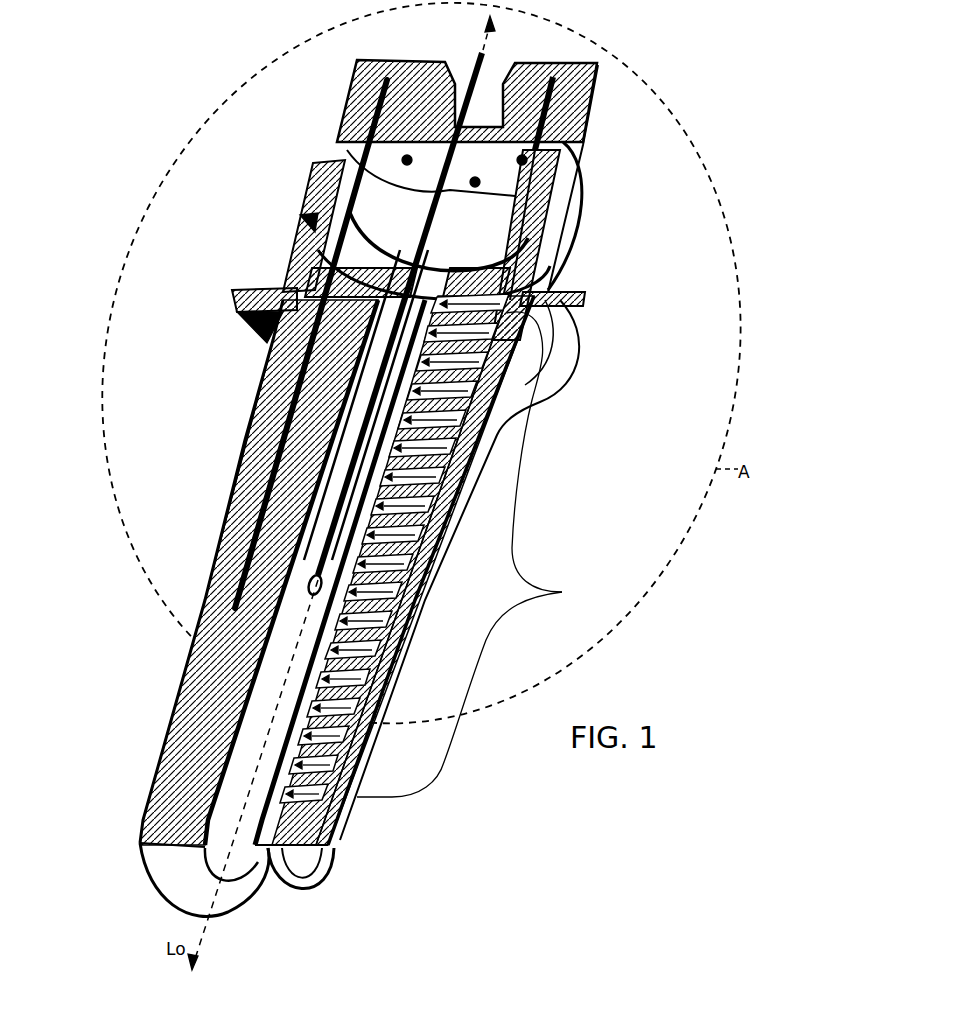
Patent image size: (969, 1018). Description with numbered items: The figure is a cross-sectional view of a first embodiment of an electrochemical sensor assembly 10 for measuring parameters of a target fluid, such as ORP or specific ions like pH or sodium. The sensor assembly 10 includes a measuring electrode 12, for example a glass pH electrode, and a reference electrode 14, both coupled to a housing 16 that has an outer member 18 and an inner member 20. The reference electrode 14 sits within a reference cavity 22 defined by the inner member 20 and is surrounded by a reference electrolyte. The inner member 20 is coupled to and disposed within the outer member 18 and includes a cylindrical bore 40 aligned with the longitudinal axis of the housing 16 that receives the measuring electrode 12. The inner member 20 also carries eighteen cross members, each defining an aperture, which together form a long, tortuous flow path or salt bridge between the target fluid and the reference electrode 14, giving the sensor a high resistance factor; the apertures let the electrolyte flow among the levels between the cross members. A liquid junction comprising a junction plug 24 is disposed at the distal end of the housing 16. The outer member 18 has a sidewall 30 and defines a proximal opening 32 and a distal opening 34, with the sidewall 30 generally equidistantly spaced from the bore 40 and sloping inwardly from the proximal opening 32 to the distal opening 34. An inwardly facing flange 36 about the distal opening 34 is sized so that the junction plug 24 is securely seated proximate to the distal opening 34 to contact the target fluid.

The electrochemical sensor assembly 10 is at (815, 155).
The measuring electrode 12 is at (262, 482).
The reference electrode 14 is at (240, 558).
The housing 16 is at (179, 579).
The outer member 18 is at (168, 737).
The inner member 20 is at (278, 410).
The reference cavity 22 is at (318, 356).
The junction plug 24 is at (320, 816).
The sidewall 30 is at (185, 800).
The proximal opening 32 is at (622, 192).
The distal opening 34 is at (88, 832).
The inwardly facing flange 36 is at (290, 898).
The cylindrical bore 40 is at (497, 440).